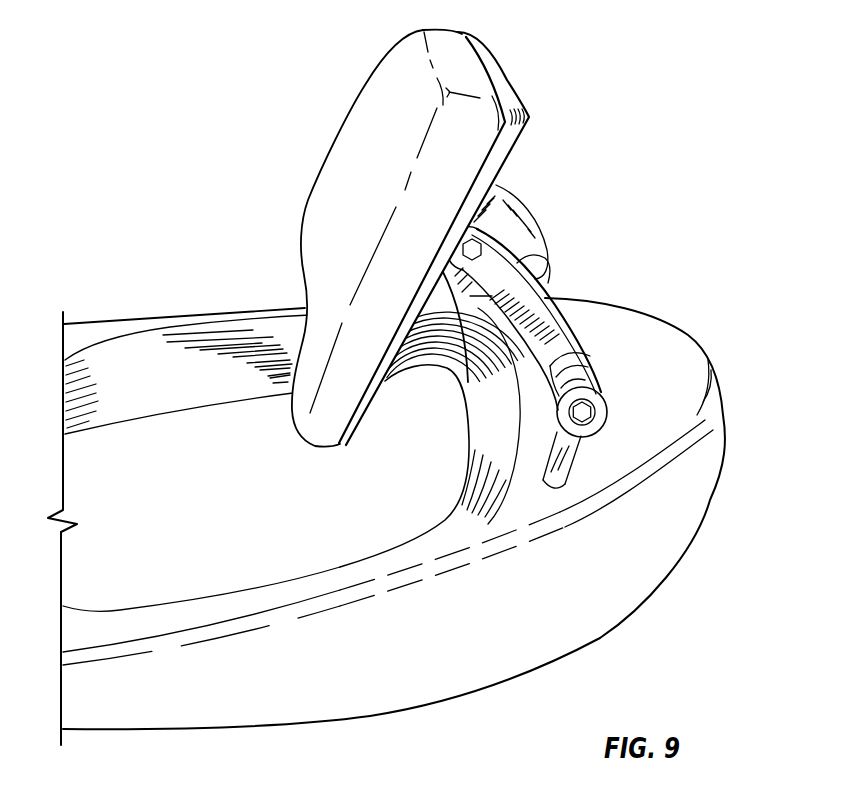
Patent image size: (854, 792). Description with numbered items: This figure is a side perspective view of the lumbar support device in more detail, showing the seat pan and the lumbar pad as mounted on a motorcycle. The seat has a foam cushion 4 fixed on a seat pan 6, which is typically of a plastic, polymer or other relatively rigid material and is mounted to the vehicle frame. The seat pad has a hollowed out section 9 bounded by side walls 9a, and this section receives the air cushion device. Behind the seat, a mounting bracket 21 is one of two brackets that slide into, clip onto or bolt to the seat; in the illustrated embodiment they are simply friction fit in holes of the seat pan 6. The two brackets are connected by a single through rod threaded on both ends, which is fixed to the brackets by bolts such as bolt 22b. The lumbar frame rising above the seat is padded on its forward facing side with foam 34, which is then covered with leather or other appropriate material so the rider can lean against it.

The foam cushion 4 is at (110, 325).
The seat pan 6 is at (600, 614).
The hollowed out section 9 is at (277, 518).
The side walls 9a is at (186, 396).
The mounting bracket 21 is at (578, 451).
The bolt 22b is at (587, 402).
The foam 34 is at (347, 130).